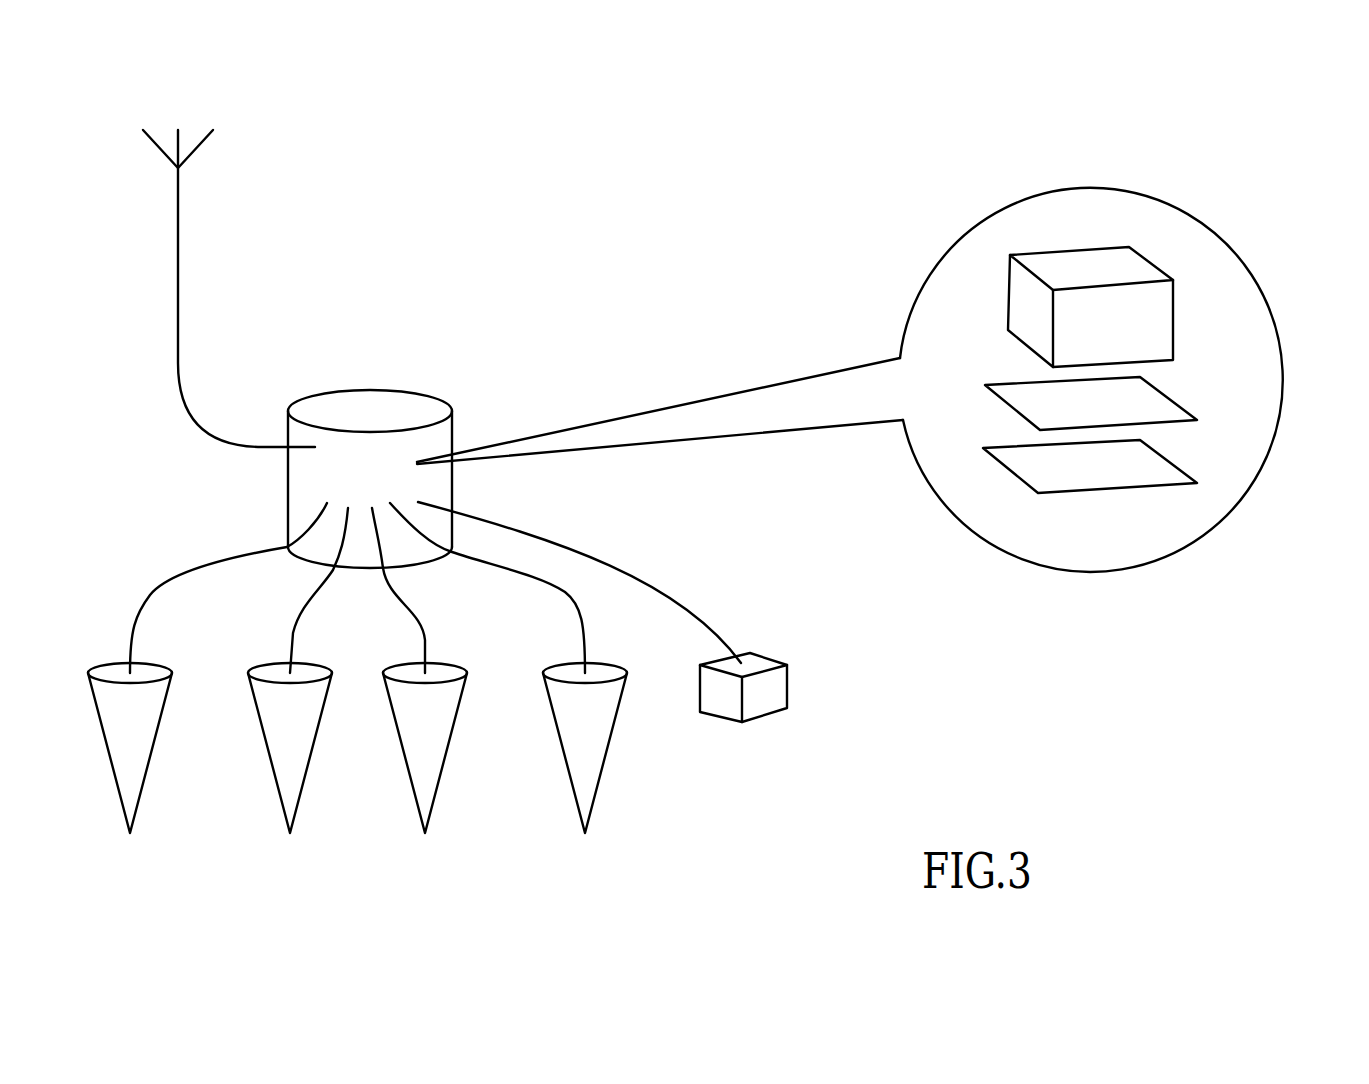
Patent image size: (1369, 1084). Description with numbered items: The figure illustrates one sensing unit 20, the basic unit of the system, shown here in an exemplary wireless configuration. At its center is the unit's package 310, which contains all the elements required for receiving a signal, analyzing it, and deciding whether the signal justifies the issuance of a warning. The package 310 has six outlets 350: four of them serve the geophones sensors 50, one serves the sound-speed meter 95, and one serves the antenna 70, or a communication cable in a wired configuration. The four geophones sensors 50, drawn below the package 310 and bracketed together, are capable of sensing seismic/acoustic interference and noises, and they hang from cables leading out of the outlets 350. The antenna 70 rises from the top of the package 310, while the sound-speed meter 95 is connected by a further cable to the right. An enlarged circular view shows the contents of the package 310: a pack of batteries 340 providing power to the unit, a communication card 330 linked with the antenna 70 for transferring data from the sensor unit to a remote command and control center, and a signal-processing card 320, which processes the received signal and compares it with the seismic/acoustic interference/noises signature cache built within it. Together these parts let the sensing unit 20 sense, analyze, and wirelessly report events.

The sensing unit 20 is at (608, 262).
The antenna 70 is at (158, 148).
The package 310 is at (358, 400).
The outlets 350 is at (298, 490).
The geophones sensors 50 is at (598, 840).
The sound-speed meter 95 is at (773, 687).
The pack of batteries 340 is at (1119, 262).
The communication card 330 is at (1148, 398).
The signal-processing card 320 is at (1150, 470).